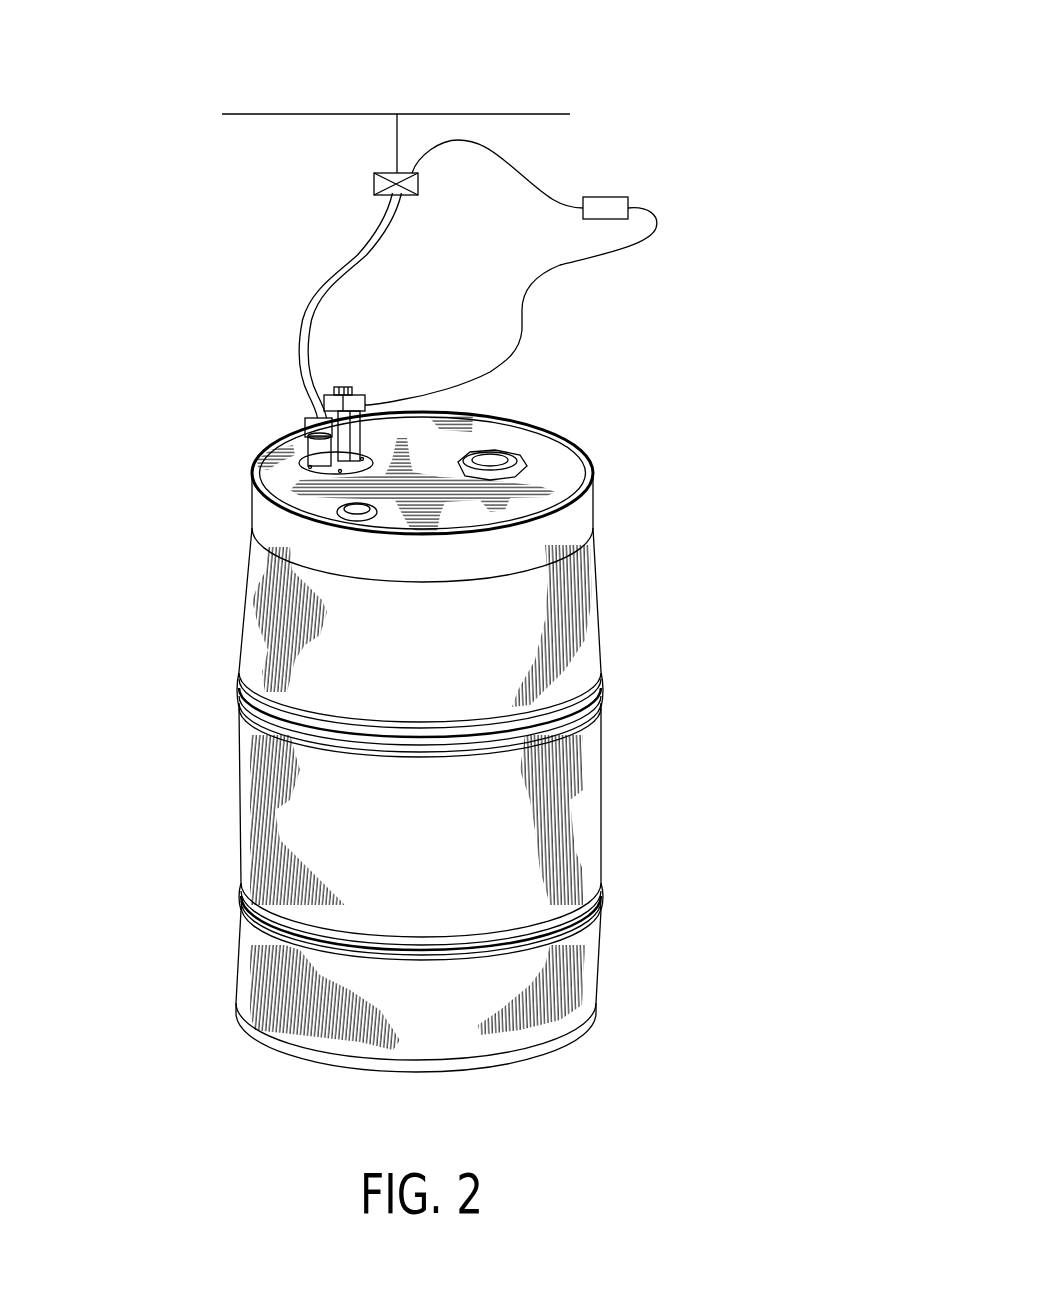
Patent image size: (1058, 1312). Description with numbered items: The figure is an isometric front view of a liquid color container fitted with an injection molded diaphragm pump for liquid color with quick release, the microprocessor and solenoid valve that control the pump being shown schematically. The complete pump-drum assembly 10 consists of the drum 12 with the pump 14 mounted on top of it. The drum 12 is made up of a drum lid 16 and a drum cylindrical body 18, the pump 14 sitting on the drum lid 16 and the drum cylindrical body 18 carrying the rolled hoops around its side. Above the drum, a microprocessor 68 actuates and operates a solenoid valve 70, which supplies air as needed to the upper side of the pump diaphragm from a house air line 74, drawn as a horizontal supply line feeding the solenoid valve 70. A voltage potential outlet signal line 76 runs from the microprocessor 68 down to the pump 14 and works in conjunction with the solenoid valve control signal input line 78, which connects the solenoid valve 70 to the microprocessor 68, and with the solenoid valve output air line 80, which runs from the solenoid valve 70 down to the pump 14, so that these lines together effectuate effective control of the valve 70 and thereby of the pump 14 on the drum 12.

The pump-drum assembly 10 is at (657, 438).
The drum 12 is at (598, 573).
The pump 14 is at (364, 390).
The drum lid 16 is at (447, 458).
The drum cylindrical body 18 is at (587, 810).
The microprocessor 68 is at (617, 197).
The solenoid valve 70 is at (374, 178).
The house air line 74 is at (433, 113).
The voltage potential outlet signal line 76 is at (550, 268).
The solenoid valve control signal input line 78 is at (497, 152).
The solenoid valve output air line 80 is at (353, 260).